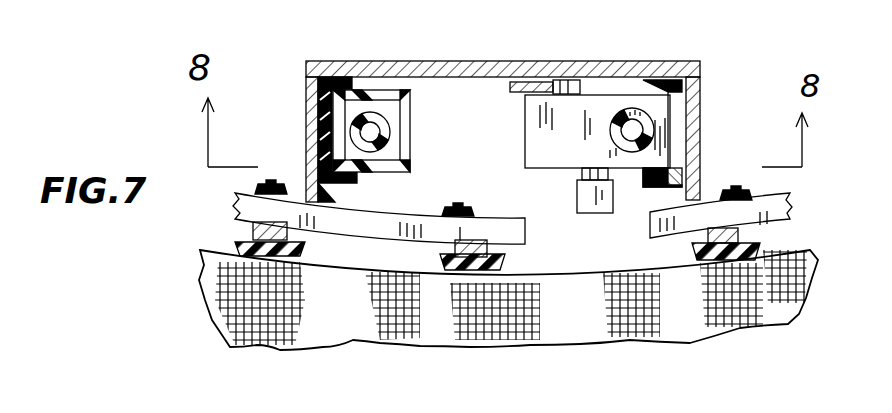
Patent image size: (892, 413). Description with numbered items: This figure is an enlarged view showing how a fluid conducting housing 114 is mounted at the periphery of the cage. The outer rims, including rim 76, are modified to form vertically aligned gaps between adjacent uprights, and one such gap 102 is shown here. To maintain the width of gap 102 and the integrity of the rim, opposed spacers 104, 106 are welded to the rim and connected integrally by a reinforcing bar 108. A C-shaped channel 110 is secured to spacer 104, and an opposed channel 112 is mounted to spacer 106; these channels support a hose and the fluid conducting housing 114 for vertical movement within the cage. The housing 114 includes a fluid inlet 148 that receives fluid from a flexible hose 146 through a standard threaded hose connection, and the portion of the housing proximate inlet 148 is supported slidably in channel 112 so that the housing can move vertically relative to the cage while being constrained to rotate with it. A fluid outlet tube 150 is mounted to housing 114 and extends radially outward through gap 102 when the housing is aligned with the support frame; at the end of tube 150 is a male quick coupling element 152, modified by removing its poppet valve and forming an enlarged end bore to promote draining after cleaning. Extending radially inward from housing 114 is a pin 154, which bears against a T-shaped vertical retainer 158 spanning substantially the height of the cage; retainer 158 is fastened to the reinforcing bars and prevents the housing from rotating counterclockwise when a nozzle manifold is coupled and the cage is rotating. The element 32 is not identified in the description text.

The base panel 32 is at (343, 325).
The outer rim 76 is at (512, 221).
The gap 102 is at (526, 228).
The spacer 104 is at (305, 81).
The spacer 106 is at (700, 129).
The reinforcing bar 108 is at (365, 61).
The C-shaped channel 110 is at (322, 120).
The channel 112 is at (675, 159).
The fluid conducting housing 114 is at (640, 88).
The flexible hose 146 is at (382, 148).
The fluid inlet 148 is at (652, 122).
The fluid outlet tube 150 is at (585, 174).
The male quick coupling element 152 is at (597, 212).
The pin 154 is at (568, 84).
The T-shaped vertical retainer 158 is at (536, 82).